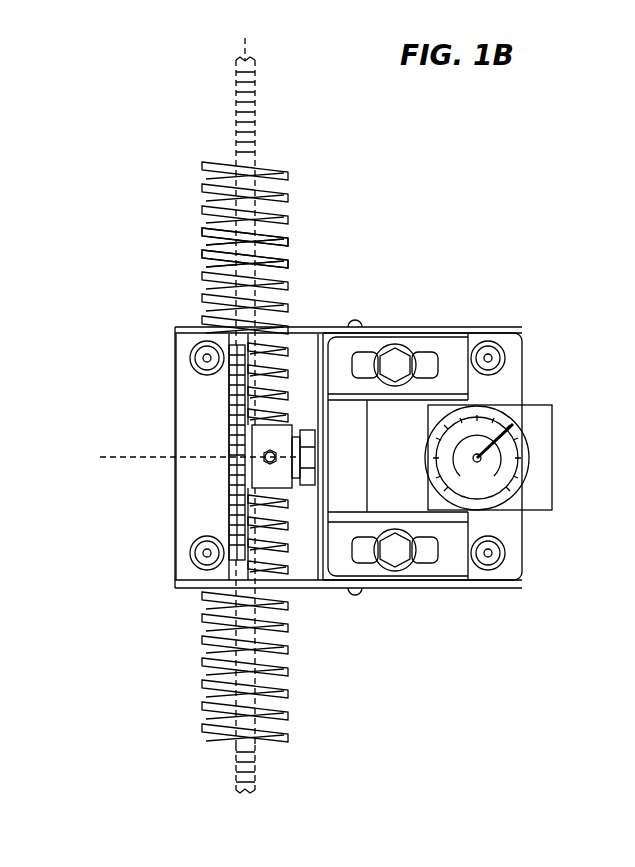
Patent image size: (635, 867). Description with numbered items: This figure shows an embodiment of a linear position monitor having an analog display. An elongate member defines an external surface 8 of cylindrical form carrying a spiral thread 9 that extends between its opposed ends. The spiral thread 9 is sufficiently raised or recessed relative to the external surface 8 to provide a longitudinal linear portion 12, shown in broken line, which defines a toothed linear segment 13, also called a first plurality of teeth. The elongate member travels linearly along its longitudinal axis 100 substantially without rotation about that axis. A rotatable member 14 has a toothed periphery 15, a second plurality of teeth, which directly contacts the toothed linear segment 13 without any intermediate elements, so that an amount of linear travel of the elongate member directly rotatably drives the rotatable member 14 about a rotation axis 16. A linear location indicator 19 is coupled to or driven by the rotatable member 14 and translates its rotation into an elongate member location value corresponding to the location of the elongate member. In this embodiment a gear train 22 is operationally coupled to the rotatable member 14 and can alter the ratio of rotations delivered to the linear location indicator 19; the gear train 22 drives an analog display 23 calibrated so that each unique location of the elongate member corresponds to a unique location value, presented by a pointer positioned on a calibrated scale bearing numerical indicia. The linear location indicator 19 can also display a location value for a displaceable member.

The longitudinal axis 100 is at (245, 380).
The longitudinal linear portion 12 is at (255, 105).
The toothed linear segment 13 is at (203, 183).
The external surface 8 is at (286, 232).
The spiral thread 9 is at (290, 262).
The toothed periphery 15 is at (229, 398).
The rotation axis 16 is at (148, 457).
The rotatable member 14 is at (229, 497).
The gear train 22 is at (422, 456).
The analog display 23 is at (532, 450).
The linear location indicator 19 is at (526, 478).